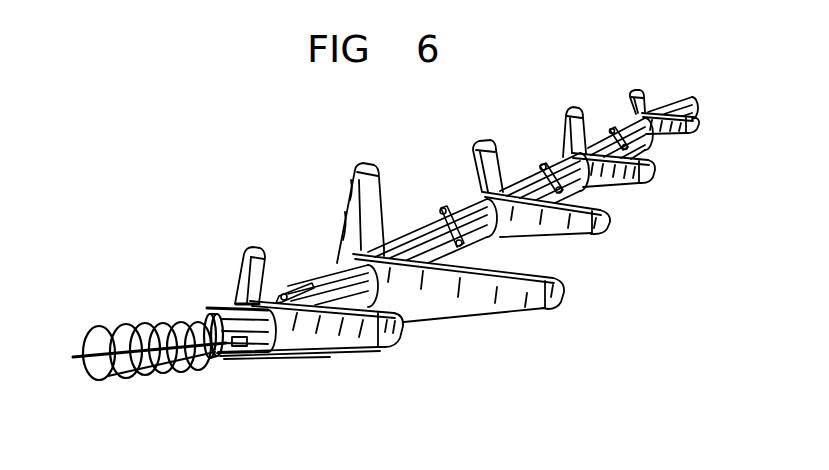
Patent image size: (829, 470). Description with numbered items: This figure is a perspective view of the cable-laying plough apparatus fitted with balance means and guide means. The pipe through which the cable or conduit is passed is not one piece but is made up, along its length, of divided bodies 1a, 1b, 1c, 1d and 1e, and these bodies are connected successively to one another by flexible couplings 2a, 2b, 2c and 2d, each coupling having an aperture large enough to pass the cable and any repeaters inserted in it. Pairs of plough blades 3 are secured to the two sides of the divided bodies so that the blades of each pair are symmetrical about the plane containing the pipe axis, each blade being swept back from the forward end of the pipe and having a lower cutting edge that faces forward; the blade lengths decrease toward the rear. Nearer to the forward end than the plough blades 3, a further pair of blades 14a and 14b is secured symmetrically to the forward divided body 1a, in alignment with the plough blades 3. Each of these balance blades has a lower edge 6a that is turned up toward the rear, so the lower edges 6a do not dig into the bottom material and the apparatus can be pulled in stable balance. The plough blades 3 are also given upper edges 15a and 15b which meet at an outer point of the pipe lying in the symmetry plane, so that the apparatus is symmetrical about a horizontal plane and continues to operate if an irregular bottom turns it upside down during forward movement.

The divided body 1a is at (249, 340).
The divided body 1b is at (330, 283).
The divided body 1c is at (523, 187).
The divided body 1d is at (602, 138).
The divided body 1e is at (677, 100).
The flexible coupling 2a is at (310, 297).
The flexible coupling 2b is at (438, 229).
The flexible coupling 2c is at (558, 163).
The flexible coupling 2d is at (633, 136).
The plough blade 3 is at (430, 259).
The lower edge 6a is at (310, 348).
The balance blade 14a is at (245, 286).
The balance blade 14b is at (348, 335).
The upper edge 15a is at (358, 208).
The upper edge 15b is at (500, 268).